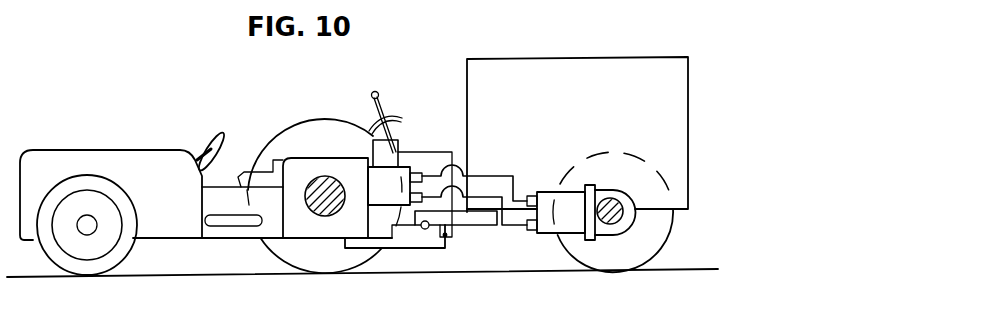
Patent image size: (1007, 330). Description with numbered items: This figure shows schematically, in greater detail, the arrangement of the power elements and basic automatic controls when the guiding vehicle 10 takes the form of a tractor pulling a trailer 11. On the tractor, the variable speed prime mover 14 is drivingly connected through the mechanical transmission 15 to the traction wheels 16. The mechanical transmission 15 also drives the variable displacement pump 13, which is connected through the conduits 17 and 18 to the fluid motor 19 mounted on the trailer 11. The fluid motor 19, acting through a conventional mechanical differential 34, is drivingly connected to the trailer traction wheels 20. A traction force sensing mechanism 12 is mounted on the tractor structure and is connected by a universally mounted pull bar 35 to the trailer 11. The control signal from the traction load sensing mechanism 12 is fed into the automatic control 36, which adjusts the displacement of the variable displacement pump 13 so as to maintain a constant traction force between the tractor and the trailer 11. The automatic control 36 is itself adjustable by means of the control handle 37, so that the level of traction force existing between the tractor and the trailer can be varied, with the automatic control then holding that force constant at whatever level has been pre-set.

The guiding vehicle 10 is at (93, 152).
The trailer 11 is at (556, 57).
The traction force sensing mechanism 12 is at (427, 242).
The variable displacement pump 13 is at (373, 181).
The variable speed prime mover 14 is at (151, 160).
The mechanical transmission 15 is at (307, 230).
The traction wheels 16 is at (344, 262).
The conduit 17 is at (486, 170).
The conduit 18 is at (495, 193).
The fluid motor 19 is at (547, 189).
The trailer traction wheels 20 is at (657, 235).
The mechanical differential 34 is at (609, 191).
The pull bar 35 is at (487, 217).
The automatic control 36 is at (394, 144).
The control handle 37 is at (372, 97).